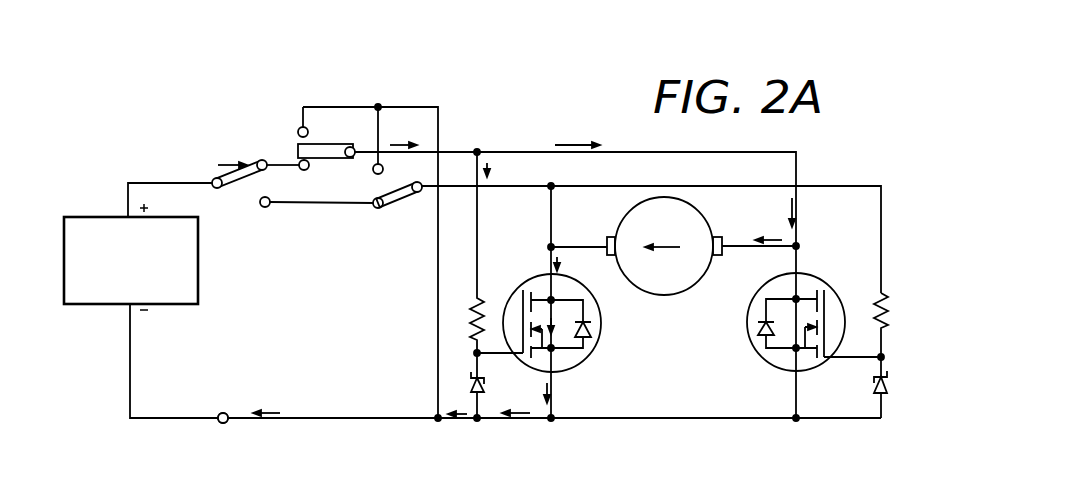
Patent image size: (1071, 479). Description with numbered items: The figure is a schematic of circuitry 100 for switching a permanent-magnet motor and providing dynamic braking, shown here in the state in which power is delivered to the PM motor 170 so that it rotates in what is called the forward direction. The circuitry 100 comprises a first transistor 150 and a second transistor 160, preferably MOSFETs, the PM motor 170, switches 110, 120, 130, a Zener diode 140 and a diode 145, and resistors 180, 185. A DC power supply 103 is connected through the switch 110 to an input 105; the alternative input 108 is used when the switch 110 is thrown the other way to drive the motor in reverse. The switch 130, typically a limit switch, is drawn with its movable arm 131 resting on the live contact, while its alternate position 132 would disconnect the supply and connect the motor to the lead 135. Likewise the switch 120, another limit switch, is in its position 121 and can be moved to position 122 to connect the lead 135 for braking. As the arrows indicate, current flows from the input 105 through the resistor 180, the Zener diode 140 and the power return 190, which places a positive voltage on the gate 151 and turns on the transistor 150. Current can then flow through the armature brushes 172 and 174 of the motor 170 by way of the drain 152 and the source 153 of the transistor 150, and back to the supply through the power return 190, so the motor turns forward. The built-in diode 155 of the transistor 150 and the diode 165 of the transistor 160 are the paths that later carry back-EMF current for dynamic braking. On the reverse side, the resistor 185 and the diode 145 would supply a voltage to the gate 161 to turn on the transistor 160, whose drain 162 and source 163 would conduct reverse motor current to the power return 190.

The circuitry 100 is at (858, 433).
The DC power supply 103 is at (198, 284).
The input 105 is at (258, 161).
The input 108 is at (262, 207).
The switch 110 is at (213, 179).
The switch 120 is at (423, 193).
The position 121 is at (375, 209).
The position 122 is at (384, 167).
The switch 130 is at (351, 146).
The switch arm 131 is at (313, 176).
The position 132 is at (301, 127).
The lead 135 is at (438, 290).
The Zener diode 140 is at (482, 355).
The diode 145 is at (870, 383).
The first transistor 150 is at (598, 348).
The gate 151 is at (496, 372).
The drain 152 is at (554, 249).
The source 153 is at (557, 390).
The diode 155 is at (588, 321).
The second transistor 160 is at (752, 346).
The gate 161 is at (858, 360).
The drain 162 is at (824, 254).
The source 163 is at (796, 388).
The diode 165 is at (758, 323).
The PM motor 170 is at (697, 283).
The armature brush 172 is at (721, 239).
The armature brush 174 is at (611, 236).
The resistor 180 is at (470, 298).
The resistor 185 is at (876, 298).
The power return 190 is at (225, 412).